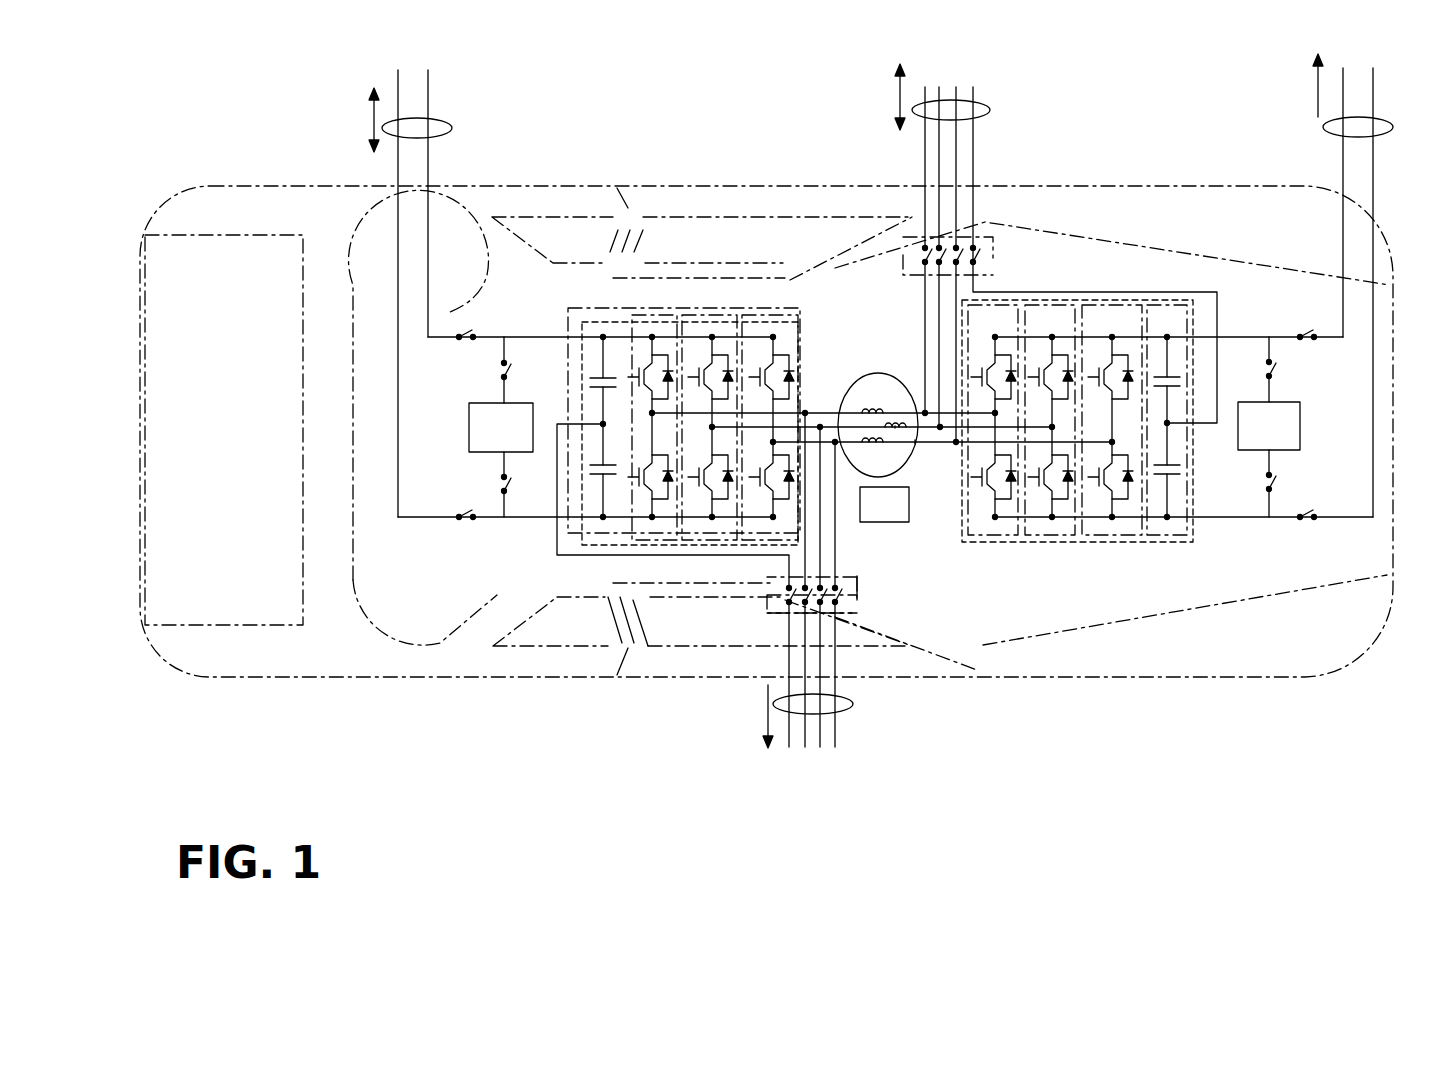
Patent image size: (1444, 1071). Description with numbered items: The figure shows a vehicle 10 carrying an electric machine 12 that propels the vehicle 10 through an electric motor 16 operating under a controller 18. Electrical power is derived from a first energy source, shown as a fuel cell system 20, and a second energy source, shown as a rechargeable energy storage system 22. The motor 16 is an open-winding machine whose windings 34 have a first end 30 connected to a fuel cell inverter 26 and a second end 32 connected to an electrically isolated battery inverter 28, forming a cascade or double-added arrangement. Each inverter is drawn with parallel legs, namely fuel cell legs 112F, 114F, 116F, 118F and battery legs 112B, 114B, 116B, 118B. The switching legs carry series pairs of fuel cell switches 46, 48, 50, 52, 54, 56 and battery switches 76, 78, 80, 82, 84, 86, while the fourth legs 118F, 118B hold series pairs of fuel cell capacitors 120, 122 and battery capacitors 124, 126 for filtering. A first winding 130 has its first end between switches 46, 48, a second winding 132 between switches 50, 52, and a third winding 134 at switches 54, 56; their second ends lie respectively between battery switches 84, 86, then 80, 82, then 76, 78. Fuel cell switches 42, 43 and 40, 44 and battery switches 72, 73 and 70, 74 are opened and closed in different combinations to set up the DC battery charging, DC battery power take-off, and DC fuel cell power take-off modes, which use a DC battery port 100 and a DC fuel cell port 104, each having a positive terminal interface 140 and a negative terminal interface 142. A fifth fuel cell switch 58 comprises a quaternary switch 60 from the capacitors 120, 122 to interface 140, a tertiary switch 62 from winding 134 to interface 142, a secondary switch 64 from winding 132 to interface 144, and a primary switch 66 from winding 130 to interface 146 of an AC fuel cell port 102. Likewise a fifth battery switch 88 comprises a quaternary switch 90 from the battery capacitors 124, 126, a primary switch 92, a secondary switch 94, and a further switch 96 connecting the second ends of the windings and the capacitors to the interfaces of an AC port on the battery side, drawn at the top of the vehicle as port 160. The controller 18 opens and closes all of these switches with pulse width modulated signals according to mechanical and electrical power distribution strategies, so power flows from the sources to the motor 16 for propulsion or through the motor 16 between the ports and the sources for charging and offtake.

The vehicle 10 is at (275, 184).
The electric machine 12 is at (1108, 242).
The electric motor 16 is at (878, 373).
The controller 18 is at (884, 504).
The fuel cell system 20 is at (501, 427).
The rechargeable energy storage system 22 is at (1269, 426).
The fuel cell inverter 26 is at (778, 300).
The battery inverter 28 is at (1167, 545).
The first end 30 is at (838, 404).
The second end 32 is at (922, 452).
The windings 34 is at (888, 400).
The third fuel cell switch 40 is at (462, 340).
The first fuel cell switch 42 is at (504, 360).
The second fuel cell switch 43 is at (504, 492).
The fourth fuel cell switch 44 is at (462, 520).
The fuel cell switch 46 is at (761, 377).
The fuel cell switch 48 is at (761, 477).
The fuel cell switch 50 is at (700, 377).
The fuel cell switch 52 is at (700, 477).
The fuel cell switch 54 is at (640, 377).
The fuel cell switch 56 is at (640, 477).
The fifth fuel cell switch 58 is at (772, 577).
The quaternary switch 60 is at (789, 592).
The tertiary switch 62 is at (805, 606).
The secondary switch 64 is at (860, 586).
The primary switch 66 is at (862, 602).
The third battery switch 70 is at (1306, 339).
The first battery switch 72 is at (1266, 360).
The second battery switch 73 is at (1267, 480).
The fourth battery switch 74 is at (1306, 519).
The battery switch 76 is at (982, 372).
The battery switch 78 is at (982, 490).
The battery switch 80 is at (1038, 372).
The battery switch 82 is at (1040, 490).
The battery switch 84 is at (1100, 372).
The battery switch 86 is at (1100, 490).
The fifth battery switch 88 is at (990, 245).
The quaternary switch 90 is at (995, 256).
The primary switch 92 is at (980, 290).
The secondary switch 94 is at (925, 238).
The switch 96 is at (939, 240).
The DC battery port 100 is at (452, 128).
The AC fuel cell port 102 is at (850, 715).
The DC fuel cell port 104 is at (1323, 127).
The fuel cell leg 112F is at (792, 322).
The fuel cell leg 114F is at (712, 318).
The fuel cell leg 116F is at (652, 318).
The fourth fuel cell leg 118F is at (610, 320).
The battery leg 112B is at (1000, 545).
The battery leg 114B is at (1055, 545).
The battery leg 116B is at (1120, 545).
The fourth battery leg 118B is at (1190, 542).
The fuel cell capacitor 120 is at (590, 380).
The fuel cell capacitor 122 is at (590, 470).
The battery capacitor 124 is at (1180, 380).
The battery capacitor 126 is at (1180, 468).
The first winding 130 is at (870, 448).
The second winding 132 is at (900, 450).
The third winding 134 is at (862, 410).
The positive terminal interface 140 is at (430, 138).
The negative terminal interface 142 is at (400, 138).
The interface 144 is at (939, 120).
The first interface 146 is at (925, 118).
The top charge port 160 is at (990, 108).